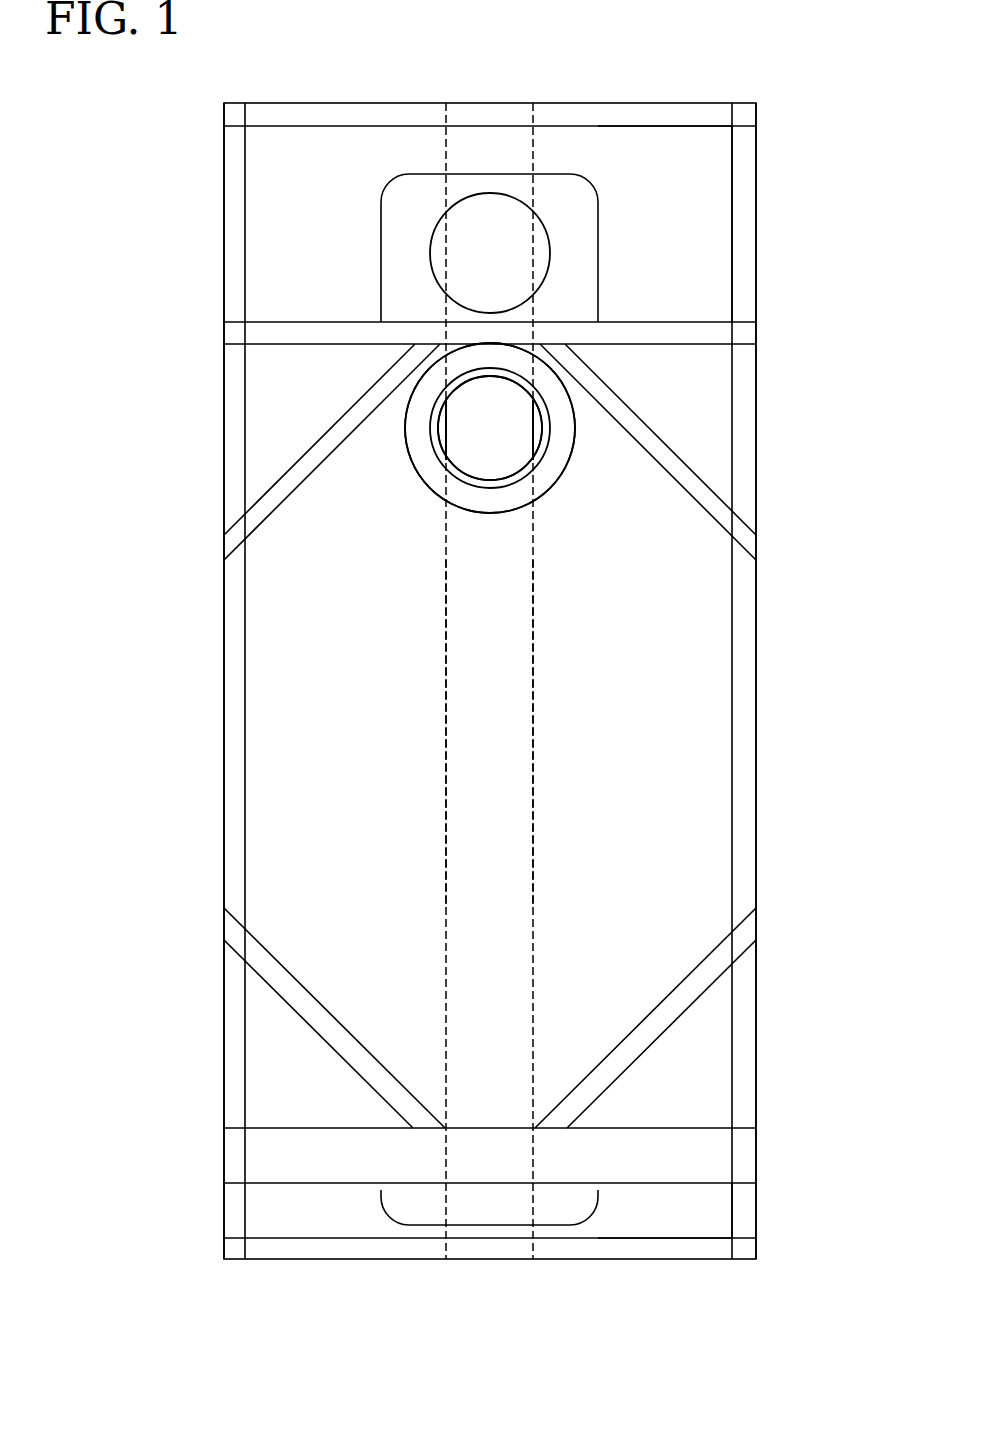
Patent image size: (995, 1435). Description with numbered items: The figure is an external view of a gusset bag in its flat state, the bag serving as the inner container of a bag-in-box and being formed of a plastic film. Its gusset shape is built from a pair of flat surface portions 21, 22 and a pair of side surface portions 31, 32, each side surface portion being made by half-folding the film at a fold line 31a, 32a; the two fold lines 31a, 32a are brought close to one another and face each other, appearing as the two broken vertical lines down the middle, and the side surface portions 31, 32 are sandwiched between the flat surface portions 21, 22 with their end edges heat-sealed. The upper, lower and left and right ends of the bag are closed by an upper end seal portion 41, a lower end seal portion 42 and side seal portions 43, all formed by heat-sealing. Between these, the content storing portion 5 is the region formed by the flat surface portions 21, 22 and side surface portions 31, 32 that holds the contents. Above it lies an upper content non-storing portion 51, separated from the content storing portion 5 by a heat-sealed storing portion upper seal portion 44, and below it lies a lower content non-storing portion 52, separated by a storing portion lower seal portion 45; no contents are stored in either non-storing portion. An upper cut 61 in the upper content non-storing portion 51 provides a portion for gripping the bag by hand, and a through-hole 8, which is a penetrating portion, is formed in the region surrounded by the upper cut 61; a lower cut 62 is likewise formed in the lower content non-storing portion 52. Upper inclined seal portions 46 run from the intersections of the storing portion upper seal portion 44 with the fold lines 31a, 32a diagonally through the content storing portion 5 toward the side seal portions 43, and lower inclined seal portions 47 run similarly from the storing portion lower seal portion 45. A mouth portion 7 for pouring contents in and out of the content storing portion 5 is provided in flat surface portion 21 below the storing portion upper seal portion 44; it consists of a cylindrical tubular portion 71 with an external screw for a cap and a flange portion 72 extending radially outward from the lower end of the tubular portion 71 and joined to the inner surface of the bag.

The content storing portion 5 is at (553, 672).
The mouth portion 7 is at (150, 430).
The tubular portion 71 is at (415, 424).
The flange portion 72 is at (430, 480).
The through-hole 8 is at (488, 227).
The flat surface portion 21 is at (482, 666).
The flat surface portion 22 is at (490, 752).
The side surface portion 31 is at (296, 596).
The fold line 31a is at (448, 820).
The side surface portion 32 is at (680, 605).
The fold line 32a is at (540, 803).
The upper end seal portion 41 is at (652, 115).
The lower end seal portion 42 is at (584, 1248).
The side seal portion 43 is at (235, 650).
The storing portion upper seal portion 44 is at (670, 335).
The storing portion lower seal portion 45 is at (667, 1157).
The upper inclined seal portion 46 is at (658, 453).
The lower inclined seal portion 47 is at (662, 997).
The upper content non-storing portion 51 is at (667, 185).
The lower content non-storing portion 52 is at (667, 1213).
The upper cut 61 is at (381, 238).
The lower cut 62 is at (483, 1226).